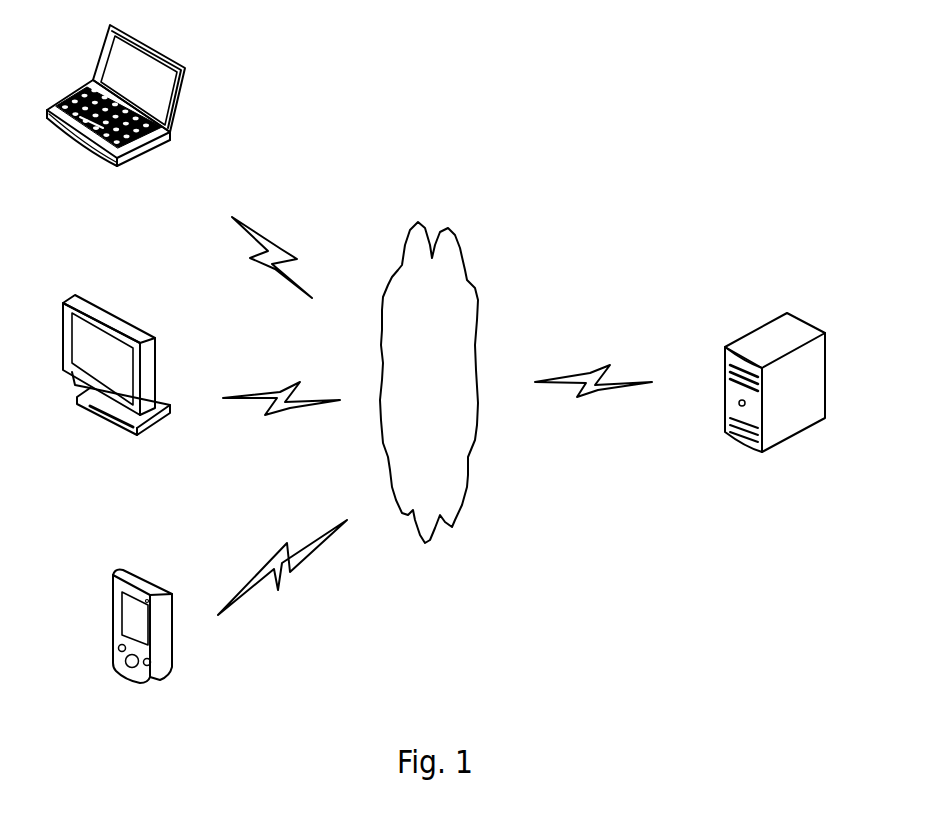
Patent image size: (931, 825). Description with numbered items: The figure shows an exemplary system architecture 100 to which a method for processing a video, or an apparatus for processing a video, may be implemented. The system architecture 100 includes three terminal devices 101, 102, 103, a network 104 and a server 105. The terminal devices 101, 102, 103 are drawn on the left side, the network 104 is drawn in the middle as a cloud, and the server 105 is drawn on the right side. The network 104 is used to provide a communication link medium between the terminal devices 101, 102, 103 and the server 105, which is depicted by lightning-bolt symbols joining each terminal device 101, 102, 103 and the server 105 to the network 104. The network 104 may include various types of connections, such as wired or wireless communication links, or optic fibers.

The system architecture 100 is at (585, 128).
The terminal device 101 is at (142, 644).
The terminal device 102 is at (116, 383).
The terminal device 103 is at (116, 114).
The network 104 is at (429, 382).
The server 105 is at (775, 406).